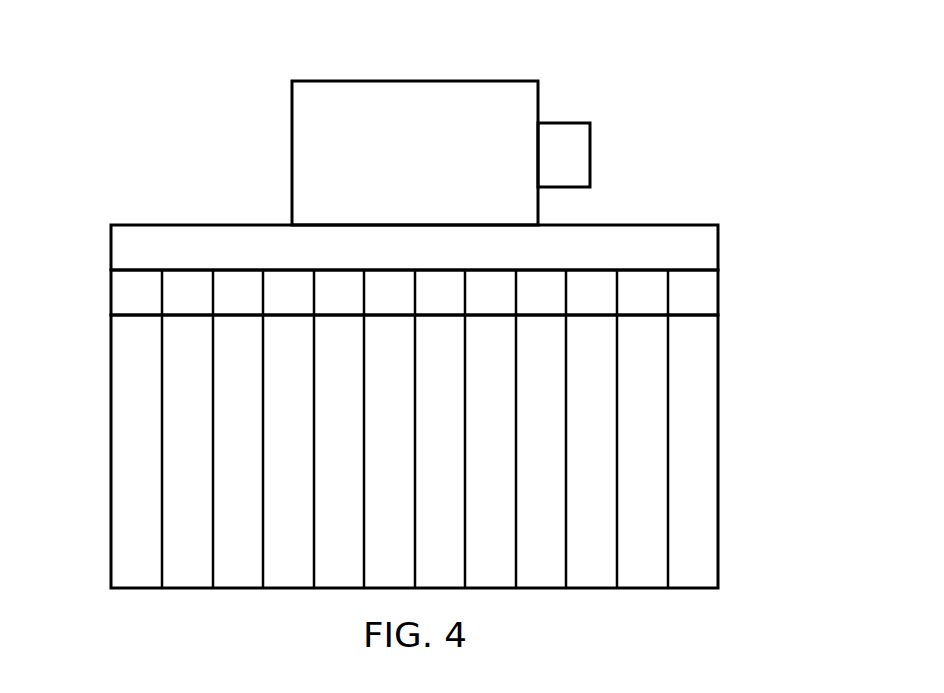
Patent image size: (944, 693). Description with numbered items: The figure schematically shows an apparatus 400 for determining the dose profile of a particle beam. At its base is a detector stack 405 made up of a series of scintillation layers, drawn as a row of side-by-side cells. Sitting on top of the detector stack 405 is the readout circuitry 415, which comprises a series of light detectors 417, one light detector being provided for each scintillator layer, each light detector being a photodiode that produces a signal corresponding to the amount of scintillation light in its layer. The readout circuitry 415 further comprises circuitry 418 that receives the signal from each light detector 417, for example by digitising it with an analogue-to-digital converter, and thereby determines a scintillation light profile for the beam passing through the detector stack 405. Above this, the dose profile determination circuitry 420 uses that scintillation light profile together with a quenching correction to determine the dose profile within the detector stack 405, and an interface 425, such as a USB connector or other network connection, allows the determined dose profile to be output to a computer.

The apparatus 400 is at (767, 95).
The detector stack 405 is at (740, 316).
The readout circuitry 415 is at (415, 270).
The light detectors 417 is at (108, 273).
The circuitry 418 is at (108, 228).
The dose profile determination circuitry 420 is at (415, 81).
The interface 425 is at (593, 158).